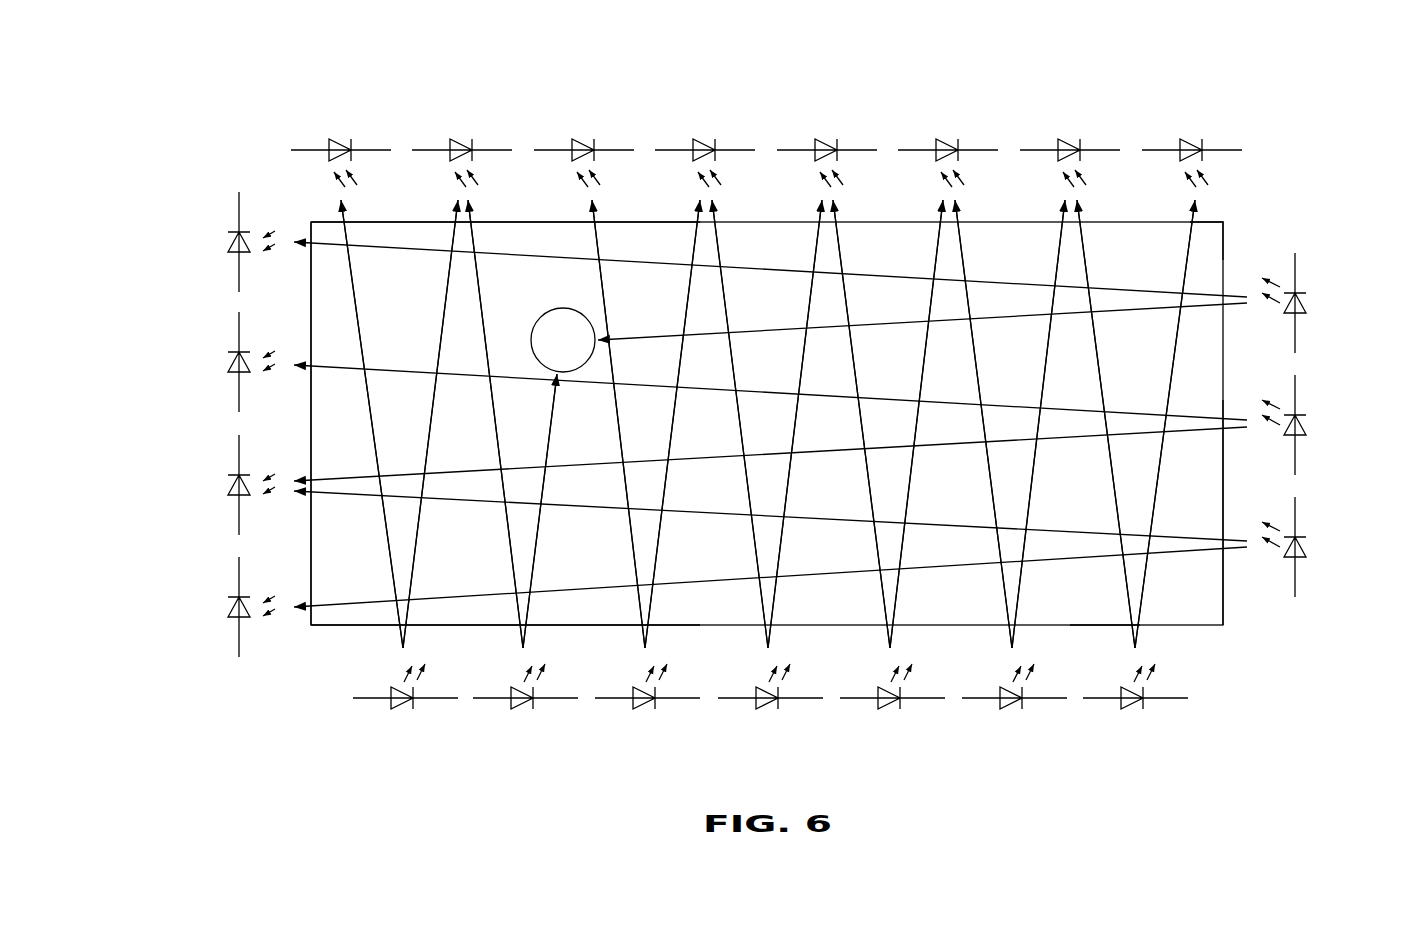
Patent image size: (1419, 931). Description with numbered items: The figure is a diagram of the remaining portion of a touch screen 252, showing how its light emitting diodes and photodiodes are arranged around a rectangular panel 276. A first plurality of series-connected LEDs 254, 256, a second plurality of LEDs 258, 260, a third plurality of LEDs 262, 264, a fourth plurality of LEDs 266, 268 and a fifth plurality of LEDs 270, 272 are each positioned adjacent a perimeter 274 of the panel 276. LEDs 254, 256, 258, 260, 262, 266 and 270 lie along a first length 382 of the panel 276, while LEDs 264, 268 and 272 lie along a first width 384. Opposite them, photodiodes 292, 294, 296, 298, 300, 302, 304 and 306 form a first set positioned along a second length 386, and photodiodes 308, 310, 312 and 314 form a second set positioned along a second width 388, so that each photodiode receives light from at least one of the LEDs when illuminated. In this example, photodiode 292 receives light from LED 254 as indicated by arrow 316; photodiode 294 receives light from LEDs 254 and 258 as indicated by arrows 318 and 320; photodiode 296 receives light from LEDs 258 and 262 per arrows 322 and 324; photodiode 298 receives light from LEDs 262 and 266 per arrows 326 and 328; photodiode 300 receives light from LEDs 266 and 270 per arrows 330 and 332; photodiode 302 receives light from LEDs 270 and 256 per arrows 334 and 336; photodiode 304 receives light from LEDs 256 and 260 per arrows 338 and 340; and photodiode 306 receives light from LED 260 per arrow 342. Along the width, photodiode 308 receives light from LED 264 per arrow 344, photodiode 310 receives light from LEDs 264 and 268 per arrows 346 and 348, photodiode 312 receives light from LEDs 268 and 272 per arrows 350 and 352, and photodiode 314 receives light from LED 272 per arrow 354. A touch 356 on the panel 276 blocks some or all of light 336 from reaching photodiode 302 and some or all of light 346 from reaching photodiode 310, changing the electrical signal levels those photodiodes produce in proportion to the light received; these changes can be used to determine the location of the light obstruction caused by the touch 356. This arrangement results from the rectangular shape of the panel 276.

The touch screen 252 is at (1243, 101).
The light emitting diode 254 is at (1170, 700).
The light emitting diode 256 is at (560, 700).
The light emitting diode 258 is at (1049, 700).
The light emitting diode 260 is at (440, 700).
The light emitting diode 262 is at (927, 700).
The light emitting diode 264 is at (1297, 327).
The light emitting diode 266 is at (805, 700).
The light emitting diode 268 is at (1297, 449).
The light emitting diode 270 is at (682, 700).
The light emitting diode 272 is at (1297, 571).
The perimeter 274 is at (1100, 630).
The panel 276 is at (1229, 221).
The photodiode 292 is at (1156, 150).
The photodiode 294 is at (1034, 150).
The photodiode 296 is at (912, 150).
The photodiode 298 is at (791, 150).
The photodiode 300 is at (669, 150).
The photodiode 302 is at (548, 150).
The photodiode 304 is at (426, 150).
The photodiode 306 is at (305, 150).
The photodiode 308 is at (238, 270).
The photodiode 310 is at (238, 390).
The photodiode 312 is at (238, 513).
The photodiode 314 is at (238, 635).
The arrow 316 is at (1143, 612).
The arrow 318 is at (1084, 238).
The arrow 320 is at (1020, 612).
The arrow 322 is at (962, 238).
The arrow 324 is at (898, 612).
The arrow 326 is at (840, 238).
The arrow 328 is at (776, 612).
The arrow 330 is at (719, 238).
The arrow 332 is at (653, 612).
The arrow 334 is at (600, 238).
The arrow 336 is at (531, 612).
The arrow 338 is at (474, 238).
The arrow 340 is at (410, 612).
The arrow 342 is at (346, 238).
The arrow 344 is at (1210, 296).
The arrow 346 is at (1203, 304).
The arrow 348 is at (1199, 419).
The arrow 350 is at (1190, 430).
The arrow 352 is at (1196, 540).
The arrow 354 is at (1190, 549).
The touch 356 is at (546, 353).
The first length 382 is at (340, 630).
The first width 384 is at (1227, 608).
The second length 386 is at (323, 220).
The second width 388 is at (311, 321).